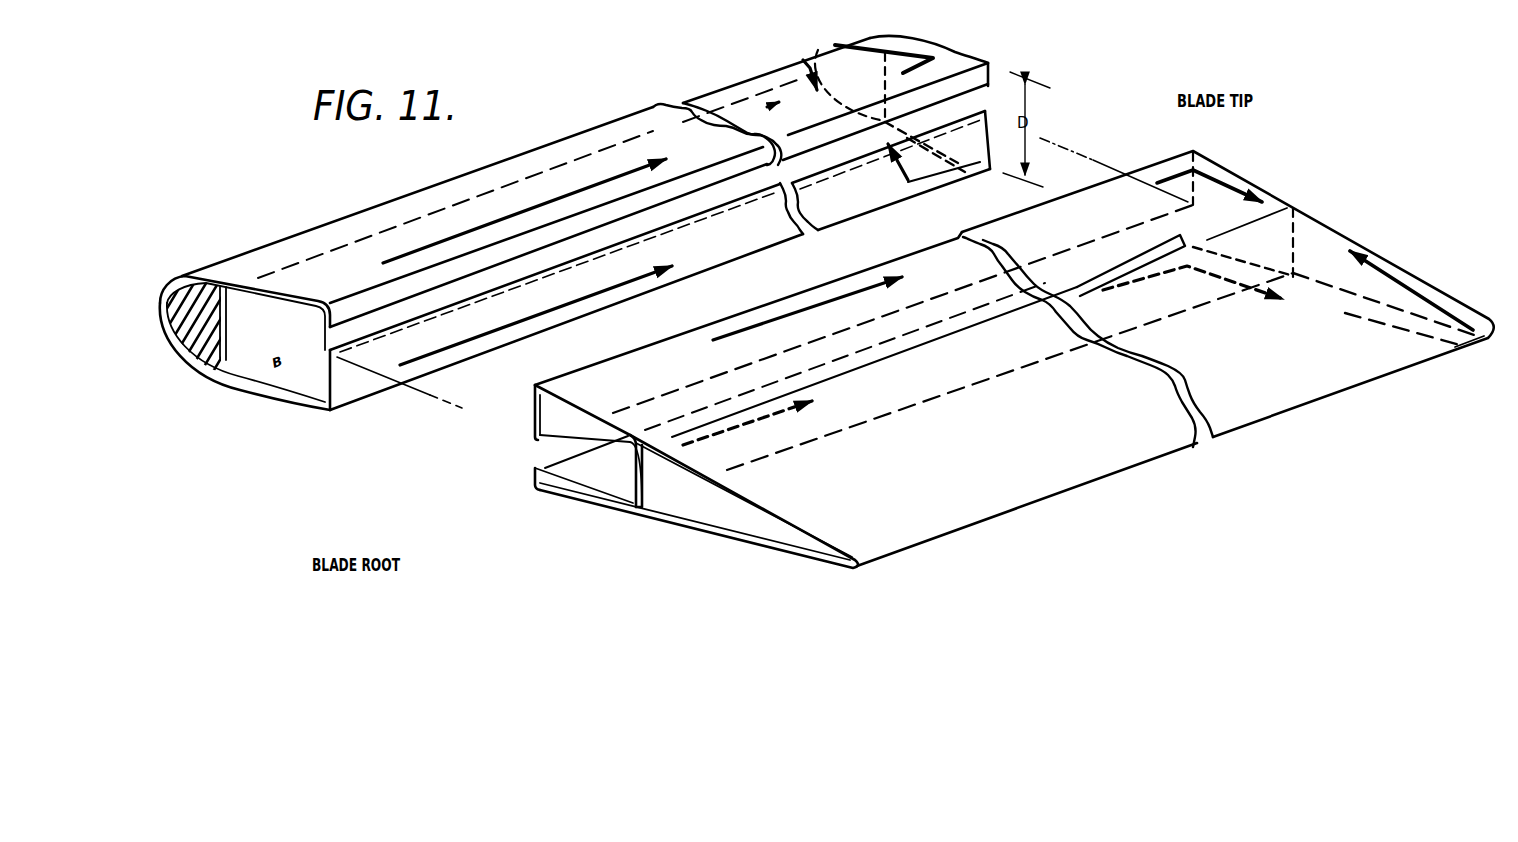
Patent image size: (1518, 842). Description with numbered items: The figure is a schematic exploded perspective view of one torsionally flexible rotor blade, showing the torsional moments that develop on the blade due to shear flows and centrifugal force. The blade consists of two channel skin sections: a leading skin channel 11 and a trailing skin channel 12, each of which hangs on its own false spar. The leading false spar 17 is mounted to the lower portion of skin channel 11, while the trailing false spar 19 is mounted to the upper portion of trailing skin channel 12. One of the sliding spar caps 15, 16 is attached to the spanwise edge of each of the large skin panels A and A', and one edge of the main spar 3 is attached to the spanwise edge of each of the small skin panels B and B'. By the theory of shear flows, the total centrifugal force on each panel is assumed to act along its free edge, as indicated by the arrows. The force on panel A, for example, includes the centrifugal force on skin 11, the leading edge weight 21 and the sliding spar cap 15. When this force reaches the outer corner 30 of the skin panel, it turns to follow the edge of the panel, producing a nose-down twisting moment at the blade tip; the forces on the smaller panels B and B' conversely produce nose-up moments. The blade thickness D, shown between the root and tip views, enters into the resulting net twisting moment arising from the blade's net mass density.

The main spar 3 is at (350, 393).
The skin 11 is at (895, 63).
The trailing skin channel 12 is at (768, 535).
The sliding spar cap 15 is at (977, 72).
The sliding spar cap 16 is at (535, 476).
The leading false spar 17 is at (247, 343).
The trailing false spar 19 is at (664, 487).
The leading edge weight 21 is at (183, 333).
The outer corner 30 is at (988, 63).